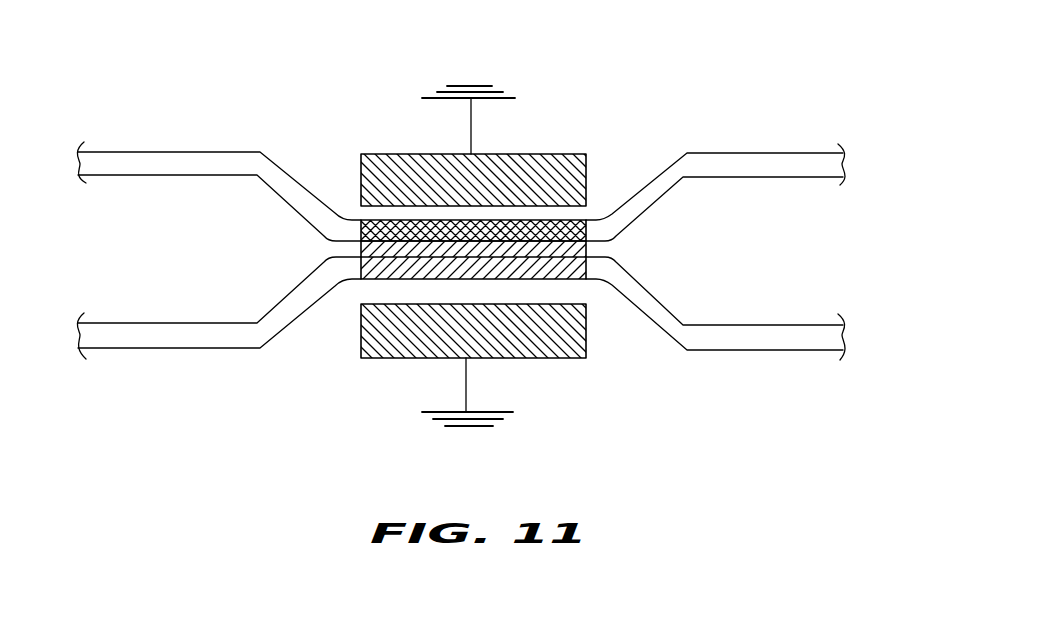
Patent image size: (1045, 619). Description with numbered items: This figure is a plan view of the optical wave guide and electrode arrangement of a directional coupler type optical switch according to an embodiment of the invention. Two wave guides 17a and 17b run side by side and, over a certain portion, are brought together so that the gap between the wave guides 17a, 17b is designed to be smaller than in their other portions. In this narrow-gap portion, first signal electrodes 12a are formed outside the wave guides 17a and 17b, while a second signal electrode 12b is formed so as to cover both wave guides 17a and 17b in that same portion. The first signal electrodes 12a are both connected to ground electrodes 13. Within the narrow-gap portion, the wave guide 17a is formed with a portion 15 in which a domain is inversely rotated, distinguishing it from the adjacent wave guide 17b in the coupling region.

The first signal electrode 12a is at (522, 158).
The second signal electrode 12b is at (587, 252).
The ground electrode 13 is at (507, 97).
The portion in which a domain is inversely rotated 15 is at (587, 228).
The wave guide 17a is at (212, 152).
The wave guide 17b is at (203, 322).